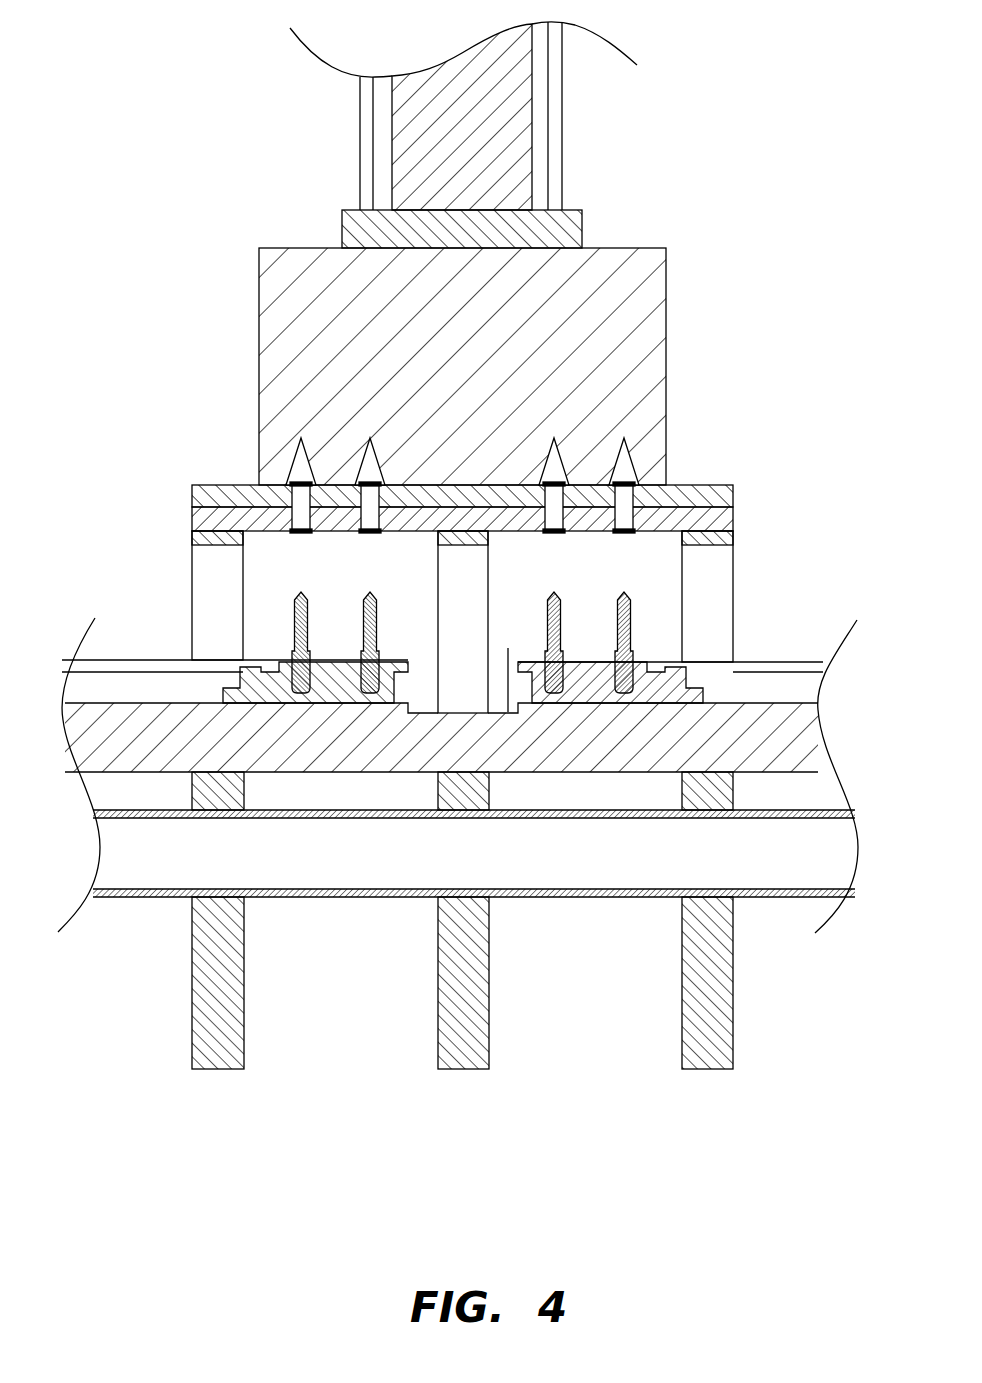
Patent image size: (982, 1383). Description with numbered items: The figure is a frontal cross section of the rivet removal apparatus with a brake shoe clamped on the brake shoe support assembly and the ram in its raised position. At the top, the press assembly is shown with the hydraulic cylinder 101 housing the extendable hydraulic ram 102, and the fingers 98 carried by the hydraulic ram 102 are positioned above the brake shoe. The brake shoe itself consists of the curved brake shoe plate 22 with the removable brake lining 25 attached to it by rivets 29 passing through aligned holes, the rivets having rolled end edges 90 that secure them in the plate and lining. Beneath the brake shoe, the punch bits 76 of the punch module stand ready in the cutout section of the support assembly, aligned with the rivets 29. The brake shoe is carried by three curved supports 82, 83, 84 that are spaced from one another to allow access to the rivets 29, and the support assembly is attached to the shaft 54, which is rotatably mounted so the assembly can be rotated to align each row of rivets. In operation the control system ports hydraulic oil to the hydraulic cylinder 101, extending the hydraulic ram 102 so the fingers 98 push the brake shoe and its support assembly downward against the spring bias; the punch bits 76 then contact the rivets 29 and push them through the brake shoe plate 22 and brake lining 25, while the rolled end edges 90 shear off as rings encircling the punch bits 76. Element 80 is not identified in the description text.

The hydraulic ram 102 is at (455, 70).
The hydraulic cylinder 101 is at (342, 232).
The fingers 98 is at (653, 383).
The brake lining 25 is at (190, 498).
The brake shoe plate 22 is at (733, 519).
The rivets 29 is at (290, 463).
The rolled end edges 90 is at (293, 533).
The punch bits 76 is at (370, 593).
The tube 80 is at (763, 663).
The shaft 54 is at (648, 900).
The curved support 84 is at (212, 1070).
The curved support 83 is at (462, 1070).
The curved support 82 is at (703, 1070).